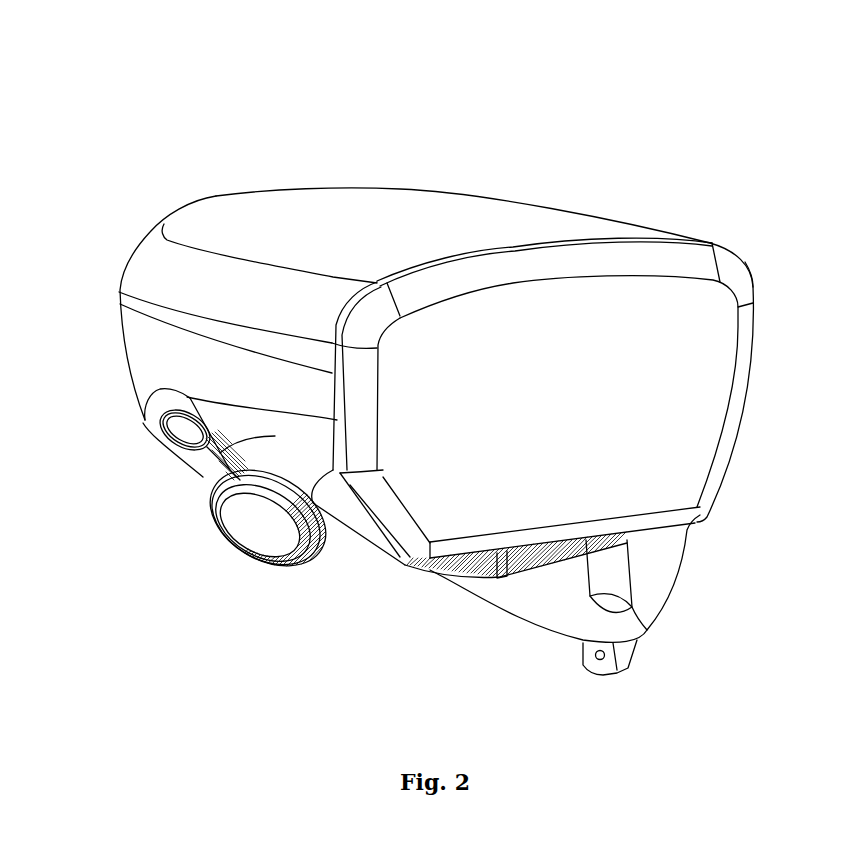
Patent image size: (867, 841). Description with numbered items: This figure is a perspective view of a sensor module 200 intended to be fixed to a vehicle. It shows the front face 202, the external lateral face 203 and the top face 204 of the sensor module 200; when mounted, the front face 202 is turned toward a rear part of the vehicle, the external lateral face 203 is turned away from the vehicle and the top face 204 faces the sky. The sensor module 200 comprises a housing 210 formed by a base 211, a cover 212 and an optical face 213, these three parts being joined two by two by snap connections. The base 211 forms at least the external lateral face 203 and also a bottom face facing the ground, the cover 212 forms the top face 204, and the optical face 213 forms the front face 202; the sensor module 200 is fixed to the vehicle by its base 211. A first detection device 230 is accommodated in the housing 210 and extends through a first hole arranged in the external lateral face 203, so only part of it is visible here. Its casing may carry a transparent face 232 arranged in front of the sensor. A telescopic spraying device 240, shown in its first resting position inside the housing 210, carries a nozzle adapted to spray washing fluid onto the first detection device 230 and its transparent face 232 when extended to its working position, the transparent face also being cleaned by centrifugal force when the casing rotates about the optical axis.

The sensor module 200 is at (410, 344).
The housing 210 is at (216, 196).
The top face 204 is at (532, 329).
The cover 212 is at (532, 408).
The front face 202 is at (607, 551).
The optical face 213 is at (565, 595).
The external lateral face 203 is at (156, 497).
The base 211 is at (203, 473).
The spraying device 240 is at (180, 435).
The first detection device 230 is at (243, 552).
The transparent face 232 is at (278, 555).